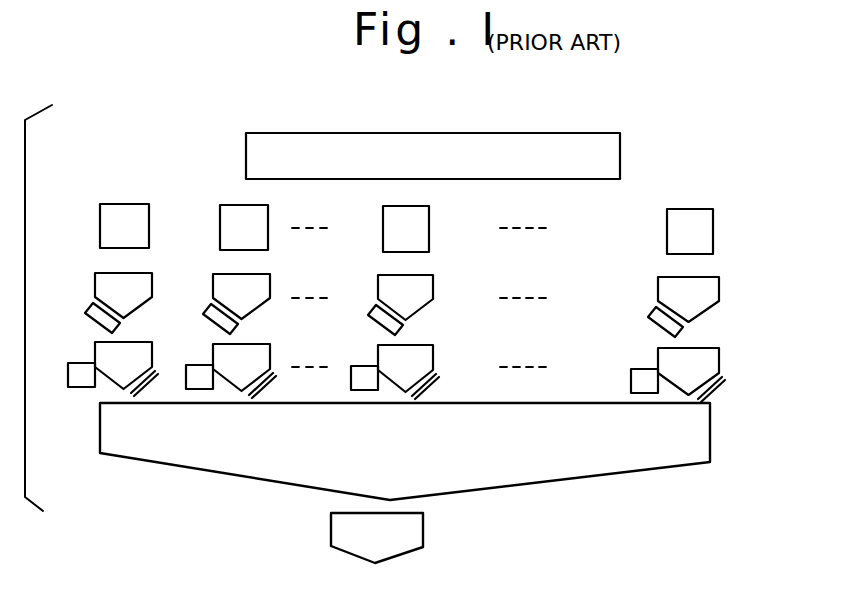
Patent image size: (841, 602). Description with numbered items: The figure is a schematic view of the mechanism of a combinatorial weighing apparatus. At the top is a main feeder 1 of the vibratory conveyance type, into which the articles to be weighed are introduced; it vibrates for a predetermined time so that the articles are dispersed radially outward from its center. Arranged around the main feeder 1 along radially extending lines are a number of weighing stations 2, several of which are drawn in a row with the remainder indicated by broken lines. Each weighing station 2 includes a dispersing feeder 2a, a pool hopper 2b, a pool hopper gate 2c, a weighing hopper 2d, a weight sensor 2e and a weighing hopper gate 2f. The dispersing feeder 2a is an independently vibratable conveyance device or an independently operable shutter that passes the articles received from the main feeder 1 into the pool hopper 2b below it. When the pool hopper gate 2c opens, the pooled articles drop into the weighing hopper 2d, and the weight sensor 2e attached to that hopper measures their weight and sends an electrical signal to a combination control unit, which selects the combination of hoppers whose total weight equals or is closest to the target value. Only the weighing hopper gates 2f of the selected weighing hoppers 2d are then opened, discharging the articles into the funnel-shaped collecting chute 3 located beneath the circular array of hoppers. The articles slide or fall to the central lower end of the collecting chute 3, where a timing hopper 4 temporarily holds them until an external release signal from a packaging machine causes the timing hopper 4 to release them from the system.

The main feeder 1 is at (456, 144).
The weighing station 2 is at (90, 155).
The dispersing feeder 2a is at (122, 208).
The pool hopper 2b is at (100, 275).
The pool hopper gate 2c is at (88, 312).
The weighing hopper 2d is at (95, 349).
The weight sensor 2e is at (72, 388).
The weighing hopper gate 2f is at (133, 396).
The collecting chute 3 is at (541, 482).
The timing hopper 4 is at (425, 527).